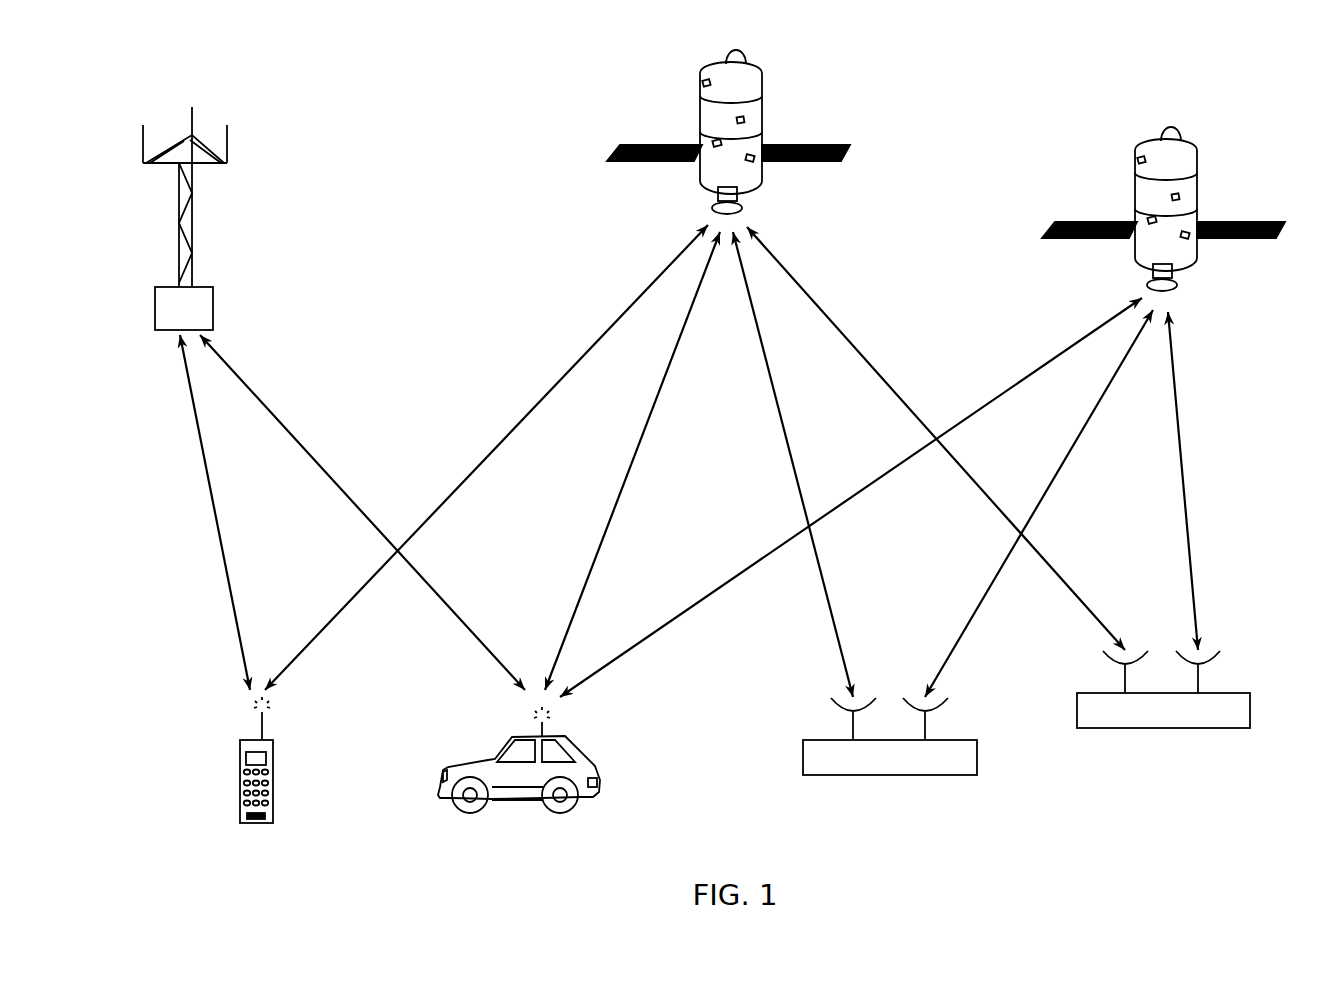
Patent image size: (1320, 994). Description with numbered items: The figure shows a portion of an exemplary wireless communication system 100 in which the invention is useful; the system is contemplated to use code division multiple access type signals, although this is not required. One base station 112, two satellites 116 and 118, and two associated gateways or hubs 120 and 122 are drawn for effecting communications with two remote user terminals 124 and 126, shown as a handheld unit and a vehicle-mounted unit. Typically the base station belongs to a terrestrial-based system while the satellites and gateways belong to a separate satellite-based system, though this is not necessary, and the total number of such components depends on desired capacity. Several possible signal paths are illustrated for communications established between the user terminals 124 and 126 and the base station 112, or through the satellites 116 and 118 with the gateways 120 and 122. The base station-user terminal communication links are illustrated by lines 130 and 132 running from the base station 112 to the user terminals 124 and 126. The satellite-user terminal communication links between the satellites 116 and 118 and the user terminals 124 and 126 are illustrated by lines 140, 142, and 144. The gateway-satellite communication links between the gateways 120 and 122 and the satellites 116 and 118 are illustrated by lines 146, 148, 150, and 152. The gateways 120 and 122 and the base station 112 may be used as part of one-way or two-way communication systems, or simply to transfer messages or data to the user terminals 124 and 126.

The communication system 100 is at (438, 115).
The base station 112 is at (213, 288).
The satellite 116 is at (763, 72).
The satellite 118 is at (1199, 150).
The gateway 120 is at (803, 760).
The gateway 122 is at (1250, 710).
The user terminal 124 is at (273, 812).
The user terminal 126 is at (470, 762).
The line 130 is at (207, 482).
The line 132 is at (298, 443).
The line 140 is at (558, 385).
The line 142 is at (645, 427).
The line 144 is at (740, 570).
The line 146 is at (780, 423).
The line 148 is at (848, 338).
The line 150 is at (1078, 440).
The line 152 is at (1182, 440).